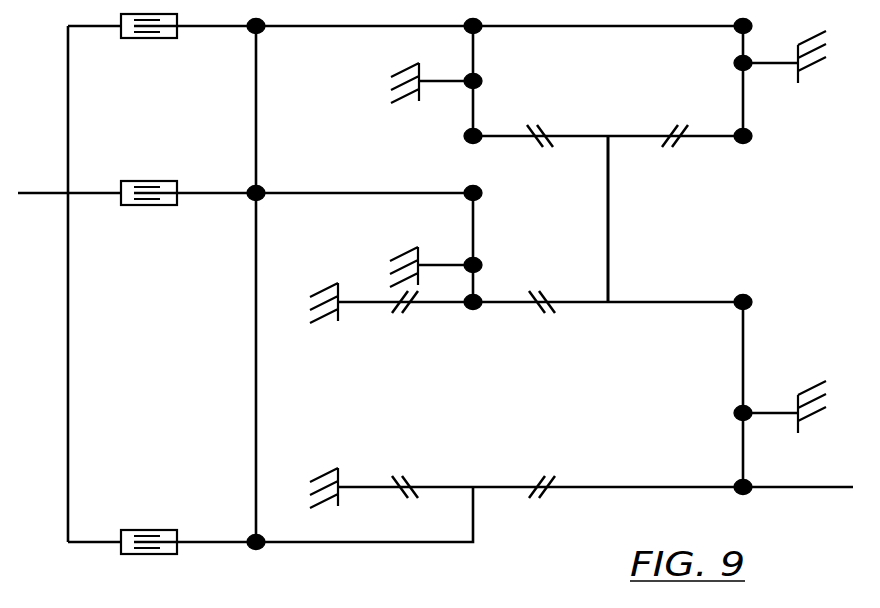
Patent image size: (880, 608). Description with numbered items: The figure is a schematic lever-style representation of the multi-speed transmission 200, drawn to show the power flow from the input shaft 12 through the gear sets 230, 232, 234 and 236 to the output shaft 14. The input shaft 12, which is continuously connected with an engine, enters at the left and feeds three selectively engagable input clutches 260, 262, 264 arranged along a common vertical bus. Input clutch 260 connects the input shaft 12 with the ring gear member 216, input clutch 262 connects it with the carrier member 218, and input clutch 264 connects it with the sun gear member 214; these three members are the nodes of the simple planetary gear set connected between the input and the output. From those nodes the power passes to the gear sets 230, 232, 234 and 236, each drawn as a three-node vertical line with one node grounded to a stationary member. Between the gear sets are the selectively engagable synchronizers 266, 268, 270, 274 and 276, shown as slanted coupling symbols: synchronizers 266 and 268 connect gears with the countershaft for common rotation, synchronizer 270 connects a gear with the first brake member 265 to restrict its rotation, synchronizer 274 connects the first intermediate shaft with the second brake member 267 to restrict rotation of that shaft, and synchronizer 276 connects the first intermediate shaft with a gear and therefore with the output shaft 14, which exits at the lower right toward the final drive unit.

The input member 12 is at (56, 192).
The output member 14 is at (838, 485).
The multi-speed transmission 200 is at (749, 252).
The sun gear member 214 is at (250, 540).
The ring gear member 216 is at (262, 30).
The carrier member 218 is at (262, 198).
The gear set 230 is at (485, 81).
The gear set 232 is at (729, 65).
The gear set 234 is at (487, 264).
The gear set 236 is at (734, 416).
The input clutch 260 is at (171, 37).
The input clutch 262 is at (148, 205).
The input clutch 264 is at (153, 529).
The first brake member 265 is at (378, 304).
The synchronizer 266 is at (536, 147).
The second brake member 267 is at (355, 485).
The synchronizer 268 is at (681, 143).
The synchronizer 270 is at (407, 309).
The synchronizer 274 is at (409, 482).
The synchronizer 276 is at (547, 491).